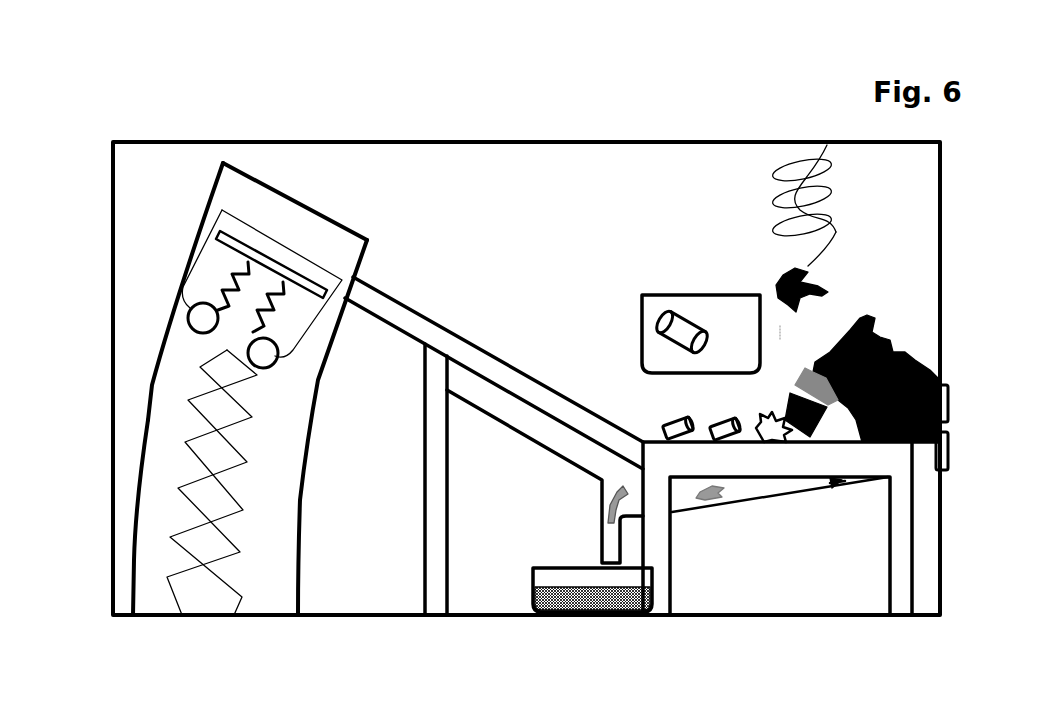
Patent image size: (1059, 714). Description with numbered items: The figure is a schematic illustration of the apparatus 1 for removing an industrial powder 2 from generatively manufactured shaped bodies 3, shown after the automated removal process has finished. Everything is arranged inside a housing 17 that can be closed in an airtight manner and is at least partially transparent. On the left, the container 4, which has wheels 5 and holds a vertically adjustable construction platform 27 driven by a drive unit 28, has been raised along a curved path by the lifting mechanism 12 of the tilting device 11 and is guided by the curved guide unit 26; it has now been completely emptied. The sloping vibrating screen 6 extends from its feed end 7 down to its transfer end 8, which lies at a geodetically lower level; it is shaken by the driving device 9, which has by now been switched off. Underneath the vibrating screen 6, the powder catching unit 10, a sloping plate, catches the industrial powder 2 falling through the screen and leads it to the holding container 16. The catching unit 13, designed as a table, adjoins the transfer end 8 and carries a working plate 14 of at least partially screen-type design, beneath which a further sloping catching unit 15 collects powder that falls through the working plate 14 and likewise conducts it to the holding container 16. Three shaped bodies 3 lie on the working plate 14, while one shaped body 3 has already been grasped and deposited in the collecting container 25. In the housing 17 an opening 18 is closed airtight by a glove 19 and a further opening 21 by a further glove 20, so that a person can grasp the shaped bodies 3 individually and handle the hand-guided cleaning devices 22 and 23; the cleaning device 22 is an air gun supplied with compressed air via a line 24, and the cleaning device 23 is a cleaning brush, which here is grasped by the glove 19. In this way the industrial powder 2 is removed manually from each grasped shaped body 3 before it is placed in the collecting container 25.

The apparatus 1 is at (357, 130).
The industrial powder 2 is at (593, 598).
The shaped bodies 3 is at (682, 327).
The container 4 is at (213, 233).
The wheels 5 is at (202, 317).
The vibrating screen 6 is at (462, 338).
The feed end 7 is at (378, 300).
The transfer end 8 is at (622, 443).
The driving device 9 is at (433, 513).
The powder catching unit 10 is at (408, 365).
The tilting device 11 is at (152, 386).
The lifting mechanism 12 is at (195, 562).
The catching unit 13 is at (833, 486).
The working plate 14 is at (787, 460).
The catching unit 15 is at (742, 505).
The holding container 16 is at (553, 578).
The housing 17 is at (443, 140).
The opening 18 is at (950, 400).
The glove 19 is at (948, 389).
The further glove 20 is at (893, 445).
The further opening 21 is at (950, 450).
The cleaning device 22 is at (783, 283).
The cleaning device 23 is at (868, 337).
The line 24 is at (802, 162).
The collecting container 25 is at (717, 317).
The curved guide unit 26 is at (140, 460).
The construction platform 27 is at (263, 250).
The drive unit 28 is at (231, 278).